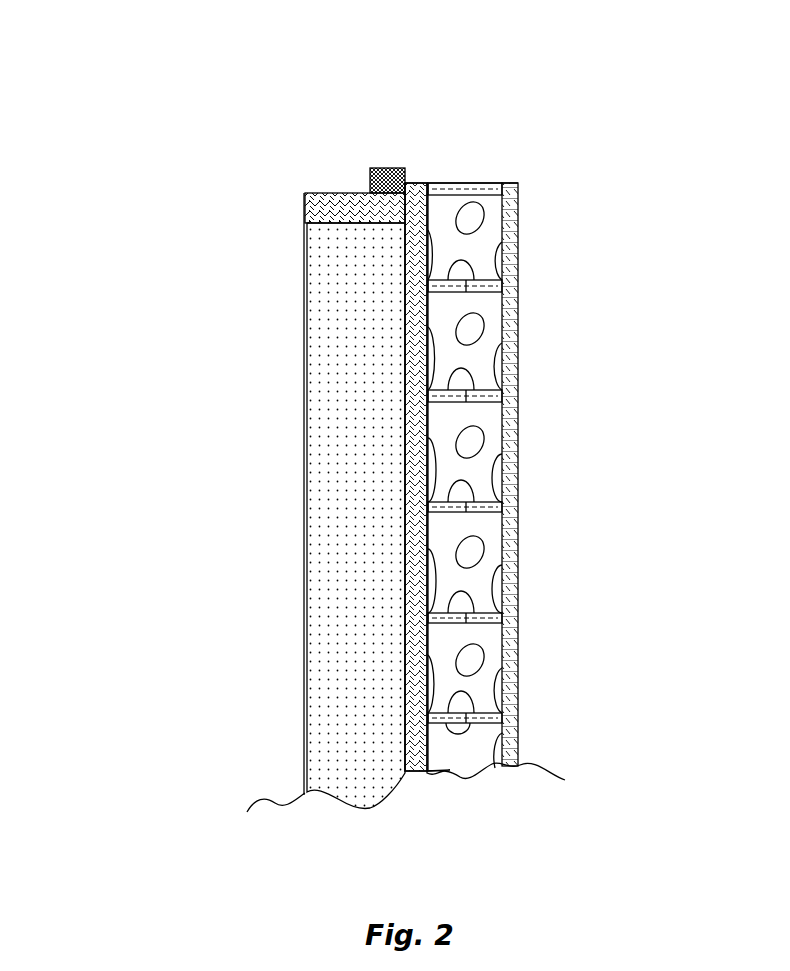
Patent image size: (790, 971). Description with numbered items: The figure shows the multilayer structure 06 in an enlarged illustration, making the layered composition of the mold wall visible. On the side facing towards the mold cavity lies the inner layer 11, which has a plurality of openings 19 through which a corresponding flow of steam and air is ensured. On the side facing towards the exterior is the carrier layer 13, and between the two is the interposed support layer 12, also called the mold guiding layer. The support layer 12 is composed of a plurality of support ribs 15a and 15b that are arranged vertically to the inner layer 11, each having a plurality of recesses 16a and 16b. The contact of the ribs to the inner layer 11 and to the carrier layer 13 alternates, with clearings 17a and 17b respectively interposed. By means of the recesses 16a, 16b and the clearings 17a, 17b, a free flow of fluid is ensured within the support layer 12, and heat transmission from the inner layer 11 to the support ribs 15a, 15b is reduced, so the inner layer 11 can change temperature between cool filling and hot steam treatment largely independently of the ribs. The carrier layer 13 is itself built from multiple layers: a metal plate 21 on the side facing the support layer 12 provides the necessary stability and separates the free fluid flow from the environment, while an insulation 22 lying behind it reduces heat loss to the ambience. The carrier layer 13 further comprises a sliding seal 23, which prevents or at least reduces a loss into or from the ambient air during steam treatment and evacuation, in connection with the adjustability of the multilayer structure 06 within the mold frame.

The multilayer structure 06 is at (142, 54).
The inner layer 11 is at (518, 402).
The support layer 12 is at (507, 130).
The carrier layer 13 is at (423, 130).
The support rib 15a is at (482, 247).
The support rib 15b is at (518, 508).
The recess 16a is at (470, 330).
The recess 16b is at (518, 692).
The clearing 17a is at (500, 368).
The clearing 17b is at (518, 621).
The opening 19 is at (518, 455).
The metal plate 21 is at (412, 523).
The insulation 22 is at (325, 441).
The sliding seal 23 is at (370, 172).